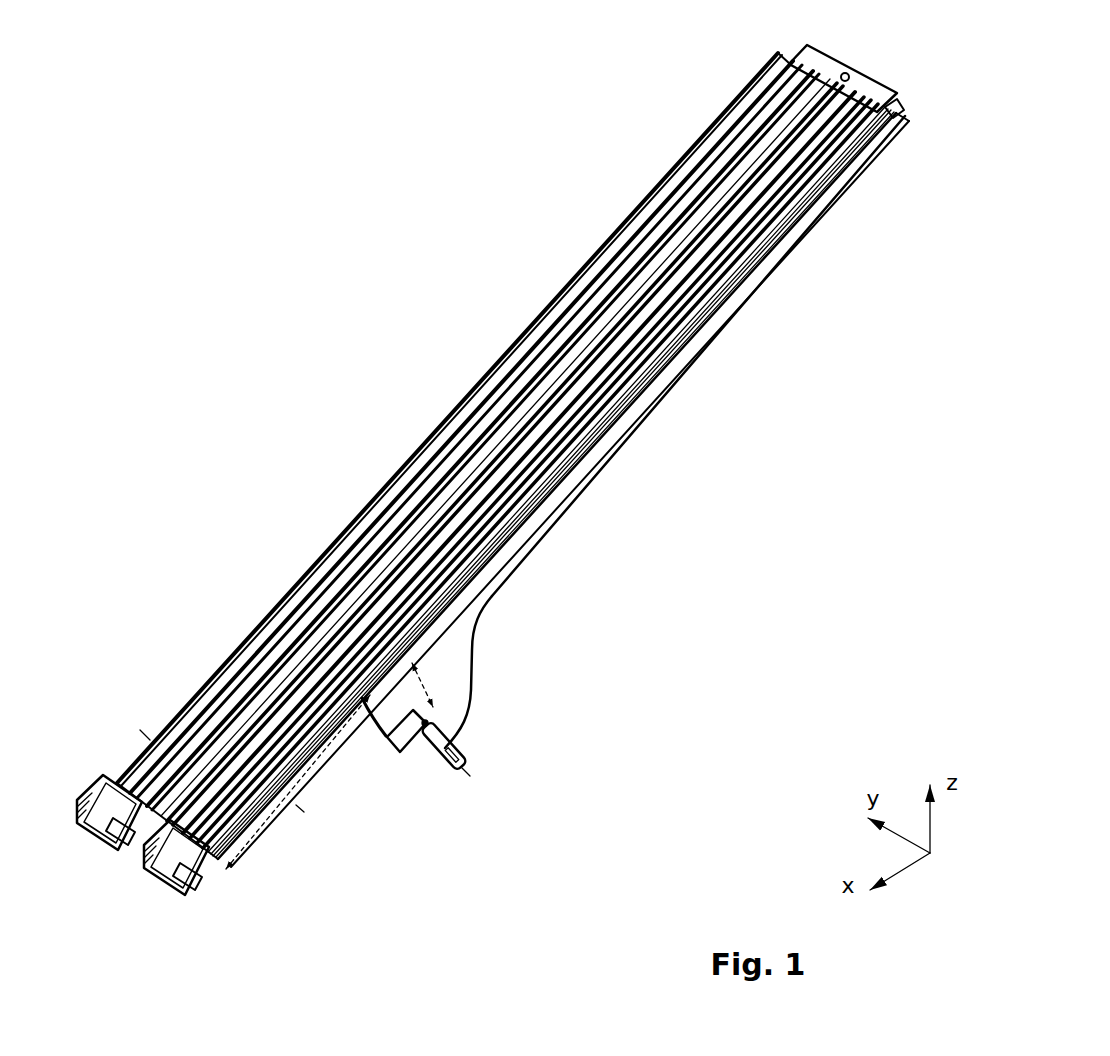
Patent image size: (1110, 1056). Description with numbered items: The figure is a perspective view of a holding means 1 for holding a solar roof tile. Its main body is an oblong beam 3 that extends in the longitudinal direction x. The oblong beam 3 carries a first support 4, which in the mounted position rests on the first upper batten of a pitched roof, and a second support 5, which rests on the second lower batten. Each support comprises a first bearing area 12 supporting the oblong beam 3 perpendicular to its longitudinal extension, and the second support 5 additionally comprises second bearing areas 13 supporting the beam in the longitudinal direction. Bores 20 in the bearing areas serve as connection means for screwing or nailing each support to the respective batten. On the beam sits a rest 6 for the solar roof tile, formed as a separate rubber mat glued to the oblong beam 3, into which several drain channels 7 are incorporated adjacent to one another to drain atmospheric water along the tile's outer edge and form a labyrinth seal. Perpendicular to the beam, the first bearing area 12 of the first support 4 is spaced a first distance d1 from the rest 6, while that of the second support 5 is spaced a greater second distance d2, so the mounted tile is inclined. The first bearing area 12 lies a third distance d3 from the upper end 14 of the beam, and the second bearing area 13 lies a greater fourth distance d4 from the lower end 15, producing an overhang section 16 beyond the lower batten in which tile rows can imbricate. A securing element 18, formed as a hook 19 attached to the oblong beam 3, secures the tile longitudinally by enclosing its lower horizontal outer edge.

The holding means 1 is at (421, 442).
The oblong beam 3 is at (730, 356).
The first support 4 is at (599, 490).
The second support 5 is at (706, 672).
The rest 6 is at (549, 442).
The drain channel 7 is at (469, 437).
The first bearing area 12 is at (654, 471).
The second bearing area 13 is at (699, 499).
The upper end 14 is at (709, 47).
The lower end 15 is at (100, 683).
The overhang section 16 is at (349, 860).
The securing element 18 is at (96, 845).
The hook 19 is at (214, 868).
The bores 20 is at (577, 842).
The first distance d1 is at (755, 41).
The second distance d2 is at (593, 789).
The third distance d3 is at (939, 154).
The fourth distance d4 is at (210, 719).